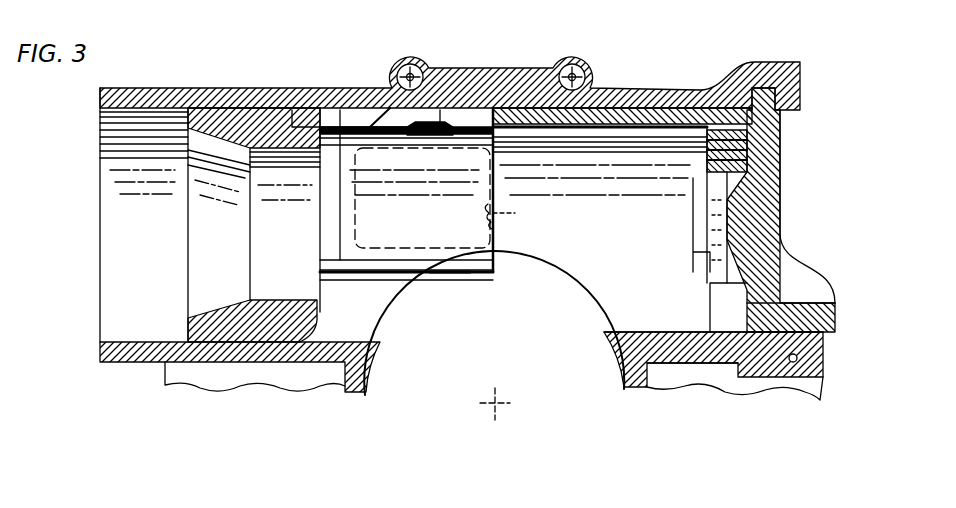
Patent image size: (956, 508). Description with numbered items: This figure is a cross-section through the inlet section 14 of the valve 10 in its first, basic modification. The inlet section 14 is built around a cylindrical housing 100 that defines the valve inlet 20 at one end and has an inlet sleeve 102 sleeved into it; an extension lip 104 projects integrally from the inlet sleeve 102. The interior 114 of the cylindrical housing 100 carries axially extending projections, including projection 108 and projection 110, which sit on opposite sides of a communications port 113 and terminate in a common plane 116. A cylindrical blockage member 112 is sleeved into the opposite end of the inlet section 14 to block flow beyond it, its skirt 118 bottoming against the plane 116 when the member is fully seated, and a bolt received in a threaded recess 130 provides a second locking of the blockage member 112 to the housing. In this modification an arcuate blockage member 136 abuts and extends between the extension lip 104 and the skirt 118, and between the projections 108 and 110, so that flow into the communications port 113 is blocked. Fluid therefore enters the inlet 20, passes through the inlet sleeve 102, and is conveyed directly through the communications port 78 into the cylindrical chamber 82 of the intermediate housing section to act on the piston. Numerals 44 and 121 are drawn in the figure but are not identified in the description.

The valve 10 is at (758, 36).
The inlet section 14 is at (672, 95).
The valve inlet 20 is at (106, 210).
The axis 44 is at (493, 402).
The communications port 78 is at (556, 296).
The cylindrical chamber 82 is at (569, 348).
The cylindrical housing 100 is at (200, 88).
The inlet sleeve 102 is at (250, 112).
The extension lip 104 is at (330, 115).
The projection 108 is at (374, 113).
The projection 110 is at (442, 280).
The cylindrical blockage member 112 is at (777, 183).
The communications port 113 is at (525, 220).
The interior 114 is at (613, 231).
The plane 116 is at (490, 222).
The skirt 118 is at (645, 115).
The base flange 121 is at (693, 348).
The threaded recess 130 is at (792, 363).
The arcuate blockage member 136 is at (428, 220).